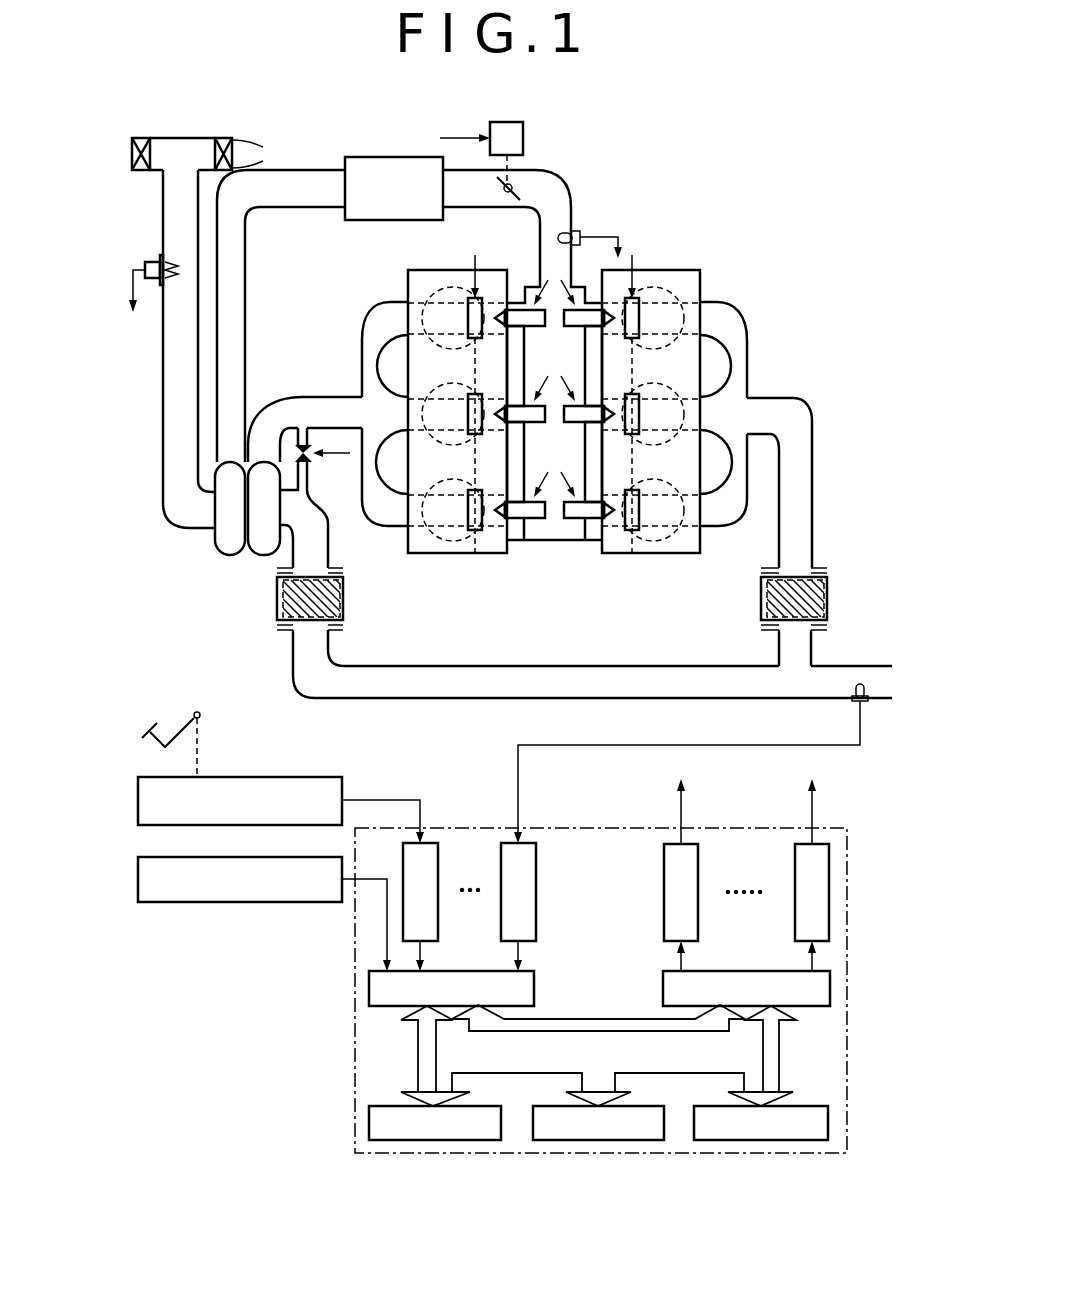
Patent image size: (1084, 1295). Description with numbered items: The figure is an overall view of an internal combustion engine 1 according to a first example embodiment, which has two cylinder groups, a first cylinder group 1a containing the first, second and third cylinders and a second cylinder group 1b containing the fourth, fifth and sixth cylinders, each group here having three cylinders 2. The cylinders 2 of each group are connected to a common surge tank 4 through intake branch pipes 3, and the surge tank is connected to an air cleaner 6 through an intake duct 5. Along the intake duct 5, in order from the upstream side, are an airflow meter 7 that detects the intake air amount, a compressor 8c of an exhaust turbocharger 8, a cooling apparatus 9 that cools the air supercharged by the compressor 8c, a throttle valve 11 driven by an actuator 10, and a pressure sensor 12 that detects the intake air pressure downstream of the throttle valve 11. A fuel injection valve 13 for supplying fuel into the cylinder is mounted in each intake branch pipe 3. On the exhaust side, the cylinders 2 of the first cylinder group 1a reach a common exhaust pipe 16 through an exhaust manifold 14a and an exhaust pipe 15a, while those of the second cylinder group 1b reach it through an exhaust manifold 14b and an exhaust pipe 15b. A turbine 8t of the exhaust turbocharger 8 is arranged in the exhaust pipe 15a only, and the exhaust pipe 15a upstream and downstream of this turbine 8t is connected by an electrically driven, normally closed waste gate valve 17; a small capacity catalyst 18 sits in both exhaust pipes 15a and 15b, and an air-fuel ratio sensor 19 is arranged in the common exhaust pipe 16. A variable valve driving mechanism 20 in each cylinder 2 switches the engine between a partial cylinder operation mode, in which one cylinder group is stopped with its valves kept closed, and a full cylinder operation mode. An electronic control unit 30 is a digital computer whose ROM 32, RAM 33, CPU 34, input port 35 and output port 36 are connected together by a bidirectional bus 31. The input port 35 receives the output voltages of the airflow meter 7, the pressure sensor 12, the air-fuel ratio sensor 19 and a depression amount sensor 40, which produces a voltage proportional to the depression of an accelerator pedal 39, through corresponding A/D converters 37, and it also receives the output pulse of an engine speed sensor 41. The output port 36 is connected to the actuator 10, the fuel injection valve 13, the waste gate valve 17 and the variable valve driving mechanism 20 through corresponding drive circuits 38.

The internal combustion engine 1 is at (600, 372).
The first cylinder group 1a is at (430, 553).
The second cylinder group 1b is at (660, 553).
The cylinder 2 is at (452, 287).
The intake branch pipe 3 is at (515, 540).
The surge tank 4 is at (532, 540).
The intake duct 5 is at (163, 405).
The air cleaner 6 is at (207, 138).
The airflow meter 7 is at (152, 262).
The exhaust turbocharger 8 is at (197, 539).
The compressor 8c is at (222, 556).
The turbine 8t is at (262, 556).
The cooling apparatus 9 is at (380, 220).
The actuator 10 is at (523, 140).
The throttle valve 11 is at (506, 199).
The pressure sensor 12 is at (582, 228).
The fuel injection valve 13 is at (560, 540).
The exhaust manifold 14a is at (362, 352).
The exhaust manifold 14b is at (747, 352).
The exhaust pipe 15a is at (300, 397).
The exhaust pipe 15b is at (812, 415).
The common exhaust pipe 16 is at (836, 666).
The waste gate valve 17 is at (312, 463).
The small capacity catalyst 18 is at (278, 605).
The air-fuel ratio sensor 19 is at (855, 707).
The variable valve driving mechanism 20 is at (475, 540).
The electronic control unit 30 is at (596, 981).
The bidirectional bus 31 is at (780, 1062).
The ROM 32 is at (393, 1142).
The RAM 33 is at (562, 1142).
The CPU 34 is at (722, 1142).
The input port 35 is at (534, 990).
The output port 36 is at (663, 990).
The A/D converter 37 is at (501, 860).
The drive circuit 38 is at (795, 865).
The accelerator pedal 39 is at (165, 727).
The depression amount sensor 40 is at (290, 777).
The engine speed sensor 41 is at (285, 903).